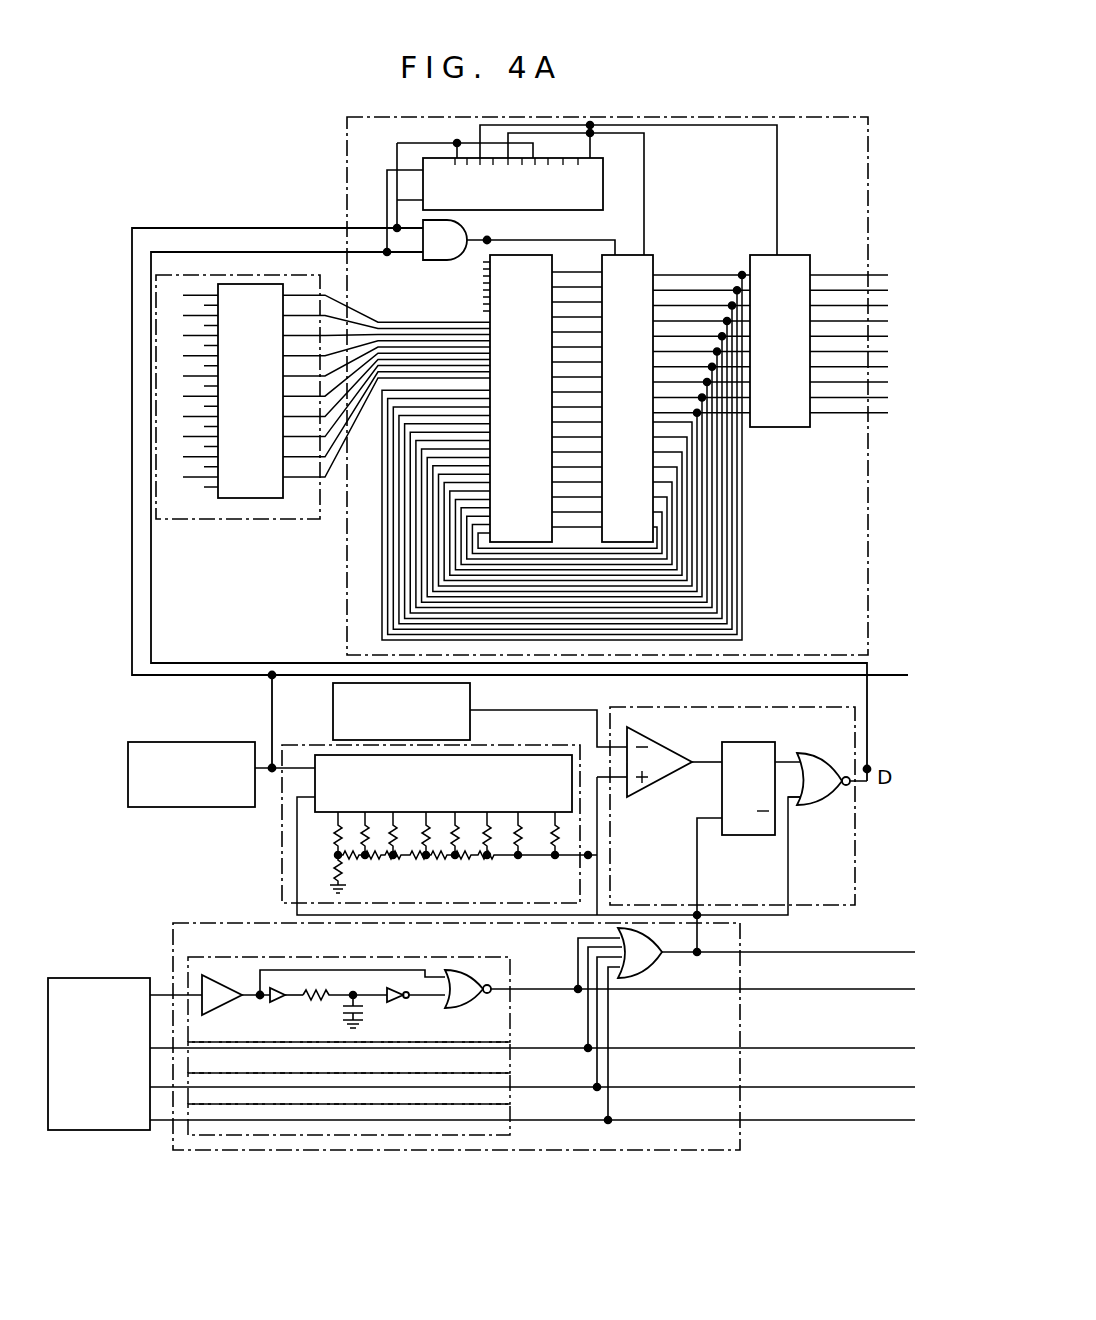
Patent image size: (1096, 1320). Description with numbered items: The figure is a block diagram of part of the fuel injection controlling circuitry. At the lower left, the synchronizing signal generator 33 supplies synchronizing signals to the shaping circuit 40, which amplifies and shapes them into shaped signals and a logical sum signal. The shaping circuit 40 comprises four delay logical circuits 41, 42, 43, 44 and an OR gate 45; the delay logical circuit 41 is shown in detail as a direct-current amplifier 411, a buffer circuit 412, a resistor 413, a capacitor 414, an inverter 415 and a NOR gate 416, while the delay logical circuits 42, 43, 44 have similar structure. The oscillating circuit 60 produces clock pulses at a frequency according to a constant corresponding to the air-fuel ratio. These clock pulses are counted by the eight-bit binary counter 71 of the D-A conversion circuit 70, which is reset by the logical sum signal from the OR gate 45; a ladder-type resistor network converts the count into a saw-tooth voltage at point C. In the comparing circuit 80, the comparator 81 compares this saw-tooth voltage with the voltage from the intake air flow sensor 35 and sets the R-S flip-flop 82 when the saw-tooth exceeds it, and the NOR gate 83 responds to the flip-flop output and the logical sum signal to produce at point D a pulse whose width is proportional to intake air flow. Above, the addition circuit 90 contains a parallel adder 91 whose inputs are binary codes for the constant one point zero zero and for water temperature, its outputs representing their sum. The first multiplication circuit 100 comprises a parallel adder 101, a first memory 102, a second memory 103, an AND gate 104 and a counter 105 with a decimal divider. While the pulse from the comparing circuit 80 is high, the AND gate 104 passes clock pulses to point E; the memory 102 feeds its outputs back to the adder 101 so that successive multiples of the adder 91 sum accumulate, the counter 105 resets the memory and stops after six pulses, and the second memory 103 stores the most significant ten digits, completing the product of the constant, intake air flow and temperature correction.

The first multiplication circuit 100 is at (347, 163).
The addition circuit 90 is at (156, 299).
The parallel adder 91 is at (250, 498).
The parallel adder 101 is at (506, 256).
The first memory 102 is at (650, 268).
The second memory 103 is at (810, 262).
The AND gate 104 is at (443, 262).
The counter with decimal divider 105 is at (603, 210).
The intake air flow sensor 35 is at (333, 708).
The oscillating circuit 60 is at (194, 742).
The D-A conversion circuit 70 is at (280, 808).
The eight-bit binary counter 71 is at (556, 755).
The comparing circuit 80 is at (855, 815).
The comparator 81 is at (655, 747).
The R-S flip-flop 82 is at (766, 742).
The NOR gate 83 is at (830, 754).
The shaping circuit 40 is at (215, 923).
The synchronizing signal generator 33 is at (118, 978).
The delay logical circuit 41 is at (510, 978).
The delay logical circuit 42 is at (510, 1063).
The delay logical circuit 43 is at (510, 1096).
The delay logical circuit 44 is at (510, 1128).
The direct-current amplifier 411 is at (233, 984).
The buffer circuit 412 is at (278, 1008).
The resistor 413 is at (316, 1007).
The capacitor 414 is at (366, 1016).
The inverter 415 is at (395, 986).
The NOR gate 416 is at (461, 970).
The OR gate 45 is at (648, 970).